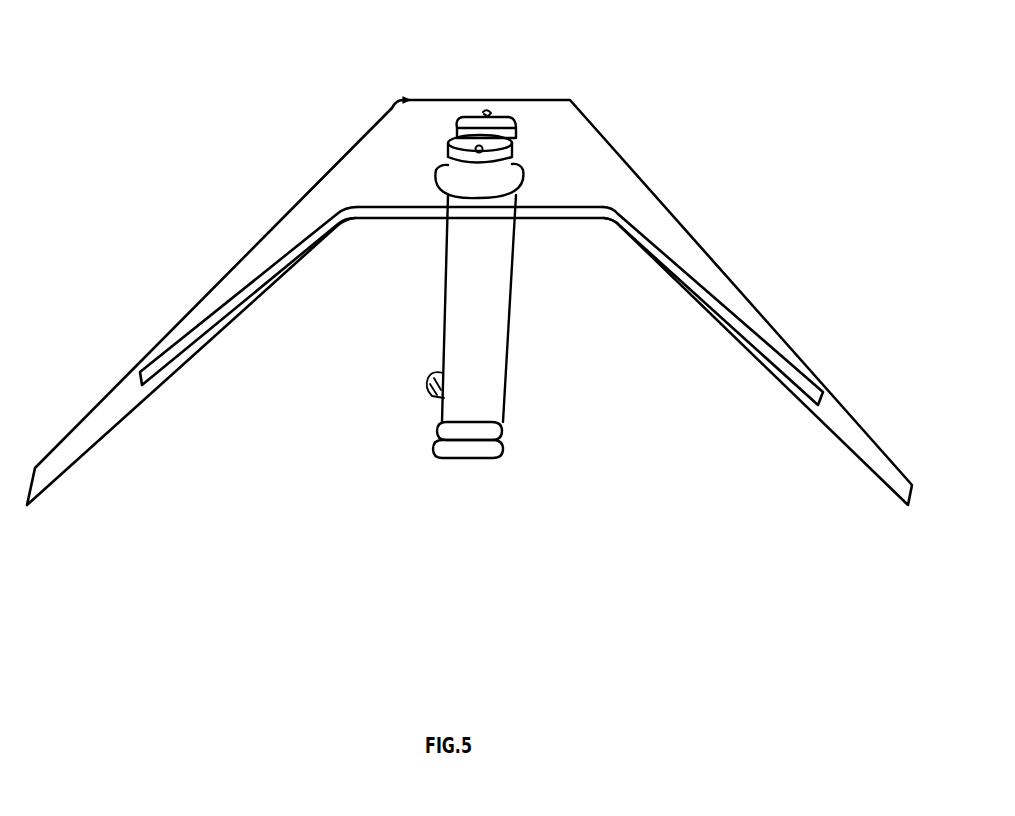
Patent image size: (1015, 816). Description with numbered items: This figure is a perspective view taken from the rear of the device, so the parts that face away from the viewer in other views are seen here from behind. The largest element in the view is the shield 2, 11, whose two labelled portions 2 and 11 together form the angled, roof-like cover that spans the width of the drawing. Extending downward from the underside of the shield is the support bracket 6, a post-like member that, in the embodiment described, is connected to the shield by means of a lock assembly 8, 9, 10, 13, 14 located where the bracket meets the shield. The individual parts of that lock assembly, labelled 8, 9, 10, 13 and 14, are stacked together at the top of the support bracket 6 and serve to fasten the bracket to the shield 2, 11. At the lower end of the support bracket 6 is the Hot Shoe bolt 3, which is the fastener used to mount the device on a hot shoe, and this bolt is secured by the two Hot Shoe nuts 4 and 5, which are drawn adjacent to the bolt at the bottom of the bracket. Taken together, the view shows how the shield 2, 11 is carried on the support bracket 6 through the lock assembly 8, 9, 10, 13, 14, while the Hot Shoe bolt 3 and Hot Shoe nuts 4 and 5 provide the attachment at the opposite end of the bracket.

The shield 2 is at (880, 462).
The Hot Shoe bolt 3 is at (488, 456).
The Hot Shoe nut 4 is at (488, 436).
The Hot Shoe nut 5 is at (416, 388).
The support bracket 6 is at (485, 328).
The lock assembly 8 is at (520, 172).
The lock assembly 9 is at (513, 160).
The lock assembly 10 is at (483, 149).
The shield 11 is at (708, 285).
The lock assembly 13 is at (502, 122).
The lock assembly 14 is at (487, 113).